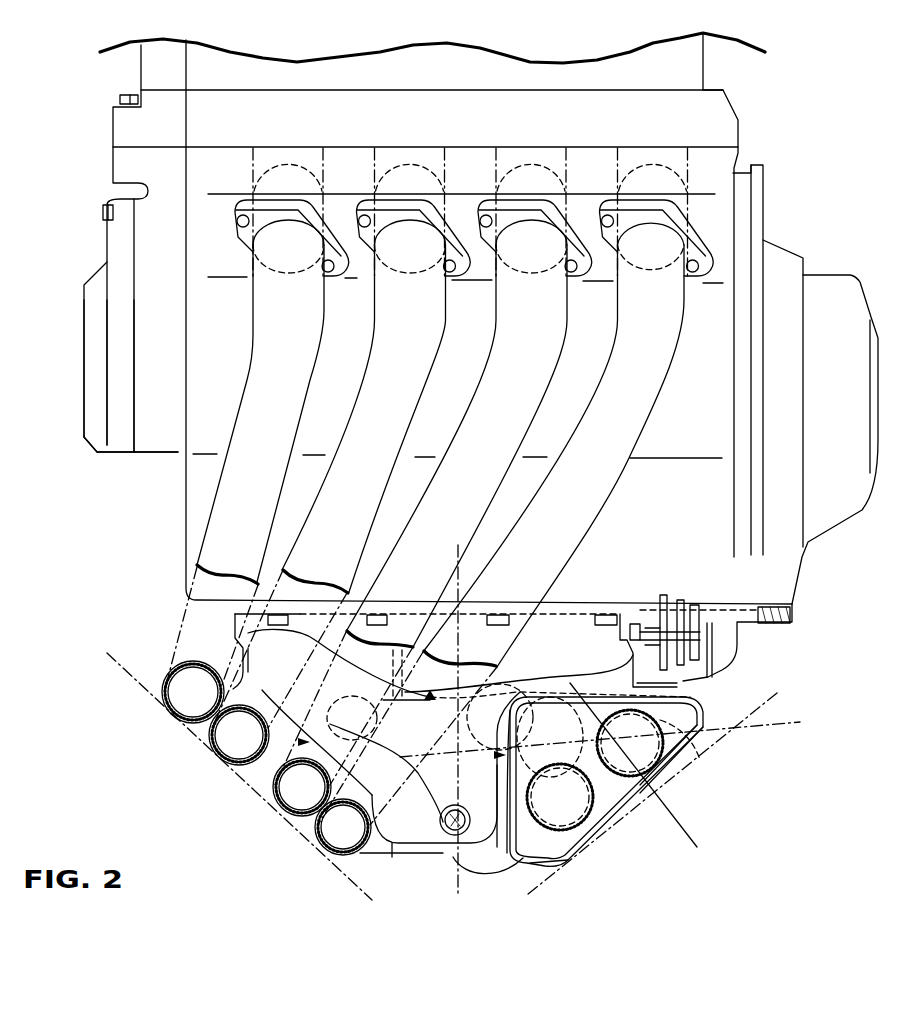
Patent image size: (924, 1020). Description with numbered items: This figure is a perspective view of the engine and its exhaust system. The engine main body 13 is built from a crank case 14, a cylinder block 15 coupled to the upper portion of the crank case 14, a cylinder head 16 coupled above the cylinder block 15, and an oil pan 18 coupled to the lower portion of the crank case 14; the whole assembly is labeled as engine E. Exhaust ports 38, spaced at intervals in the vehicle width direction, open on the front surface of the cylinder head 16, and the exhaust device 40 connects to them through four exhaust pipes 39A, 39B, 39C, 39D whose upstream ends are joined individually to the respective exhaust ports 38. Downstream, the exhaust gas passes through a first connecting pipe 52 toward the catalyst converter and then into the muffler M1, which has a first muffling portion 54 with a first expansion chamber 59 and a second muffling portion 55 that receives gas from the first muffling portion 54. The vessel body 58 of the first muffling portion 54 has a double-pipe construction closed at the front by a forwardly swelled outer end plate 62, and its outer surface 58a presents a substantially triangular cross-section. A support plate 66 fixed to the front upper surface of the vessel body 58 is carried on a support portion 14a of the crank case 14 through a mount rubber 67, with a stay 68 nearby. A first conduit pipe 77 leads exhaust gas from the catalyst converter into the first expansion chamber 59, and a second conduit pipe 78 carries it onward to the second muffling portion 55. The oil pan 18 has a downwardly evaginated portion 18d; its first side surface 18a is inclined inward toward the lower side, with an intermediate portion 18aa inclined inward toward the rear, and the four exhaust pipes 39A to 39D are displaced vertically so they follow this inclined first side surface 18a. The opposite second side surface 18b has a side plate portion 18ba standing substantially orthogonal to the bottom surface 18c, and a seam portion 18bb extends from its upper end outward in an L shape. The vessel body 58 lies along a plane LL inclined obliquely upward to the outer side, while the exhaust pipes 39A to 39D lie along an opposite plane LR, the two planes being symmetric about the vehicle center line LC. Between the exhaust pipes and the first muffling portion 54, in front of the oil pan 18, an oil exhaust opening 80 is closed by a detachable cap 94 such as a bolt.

The engine E is at (740, 135).
The engine main body 13 is at (151, 453).
The crank case 14 is at (193, 532).
The support portion 14a is at (683, 682).
The cylinder block 15 is at (202, 397).
The cylinder head 16 is at (715, 182).
The oil pan 18 is at (557, 622).
The first side surface 18a is at (280, 747).
The intermediate portion 18aa is at (393, 692).
The second side surface 18b is at (733, 813).
The side plate portion 18ba is at (590, 817).
The seam portion 18bb is at (644, 778).
The bottom surface 18c is at (507, 852).
The evaginated portion 18d is at (393, 855).
The exhaust ports 38 is at (258, 163).
The exhaust pipe 39A is at (262, 355).
The exhaust pipe 39B is at (378, 347).
The exhaust pipe 39C is at (505, 356).
The exhaust pipe 39D is at (635, 408).
The exhaust device 40 is at (163, 684).
The first connecting pipe 52 is at (309, 612).
The first muffling portion 54 is at (676, 775).
The second muffling portion 55 is at (506, 612).
The vessel body 58 is at (615, 755).
The outlet edge 58a is at (680, 771).
The first expansion chamber 59 is at (712, 740).
The outer end plate 62 is at (593, 710).
The support plate 66 is at (712, 659).
The mount rubber 67 is at (690, 543).
The stay 68 is at (516, 694).
The first conduit pipe 77 is at (697, 710).
The second conduit pipe 78 is at (588, 852).
The oil exhaust opening 80 is at (440, 823).
The cap 94 is at (422, 778).
The vehicle center line LC is at (458, 545).
The plane LR is at (127, 665).
The plane LL is at (753, 713).
The muffler M1 is at (562, 866).